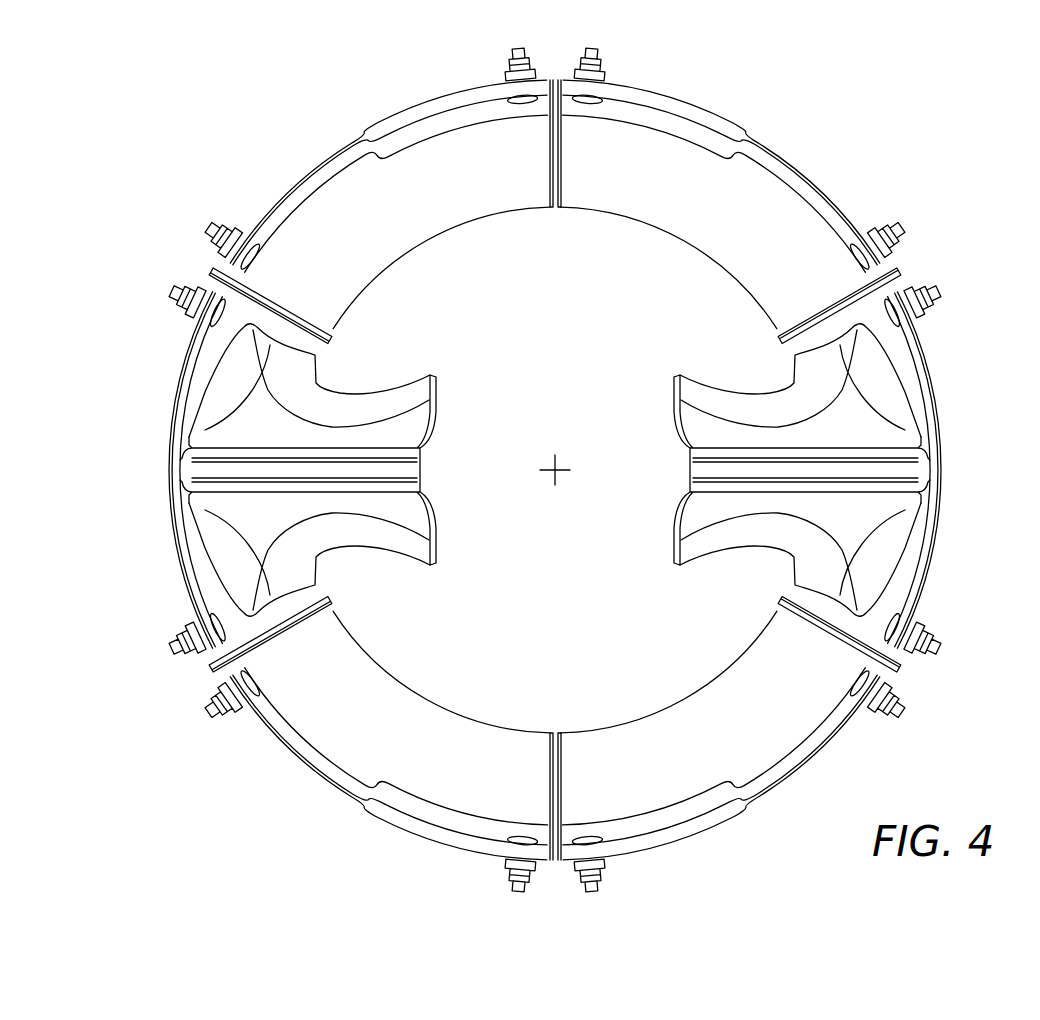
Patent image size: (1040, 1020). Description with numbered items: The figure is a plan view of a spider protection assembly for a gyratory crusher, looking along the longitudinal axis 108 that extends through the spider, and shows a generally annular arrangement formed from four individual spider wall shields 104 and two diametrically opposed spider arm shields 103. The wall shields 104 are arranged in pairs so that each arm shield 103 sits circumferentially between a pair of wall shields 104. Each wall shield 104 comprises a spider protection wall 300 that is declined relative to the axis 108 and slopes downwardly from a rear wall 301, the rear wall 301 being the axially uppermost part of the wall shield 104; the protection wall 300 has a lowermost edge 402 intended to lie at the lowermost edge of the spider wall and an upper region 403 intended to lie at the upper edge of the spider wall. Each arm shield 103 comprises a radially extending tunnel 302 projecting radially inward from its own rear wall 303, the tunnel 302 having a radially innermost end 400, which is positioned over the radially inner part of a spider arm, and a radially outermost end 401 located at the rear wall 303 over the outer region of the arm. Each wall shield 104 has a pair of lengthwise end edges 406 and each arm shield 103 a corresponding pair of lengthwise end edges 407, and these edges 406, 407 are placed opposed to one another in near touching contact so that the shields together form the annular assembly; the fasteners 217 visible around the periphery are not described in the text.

The rear wall 301 is at (689, 110).
The spider wall shield 104 is at (811, 141).
The fastener 217 is at (908, 226).
The upper region 403 is at (308, 190).
The lengthwise end edges 406 is at (558, 146).
The wall lowermost edge 402 is at (468, 223).
The spider protection wall 300 is at (663, 222).
The lengthwise end edges 407 is at (291, 310).
The radially innermost end 400 is at (672, 418).
The radially outermost end 401 is at (925, 405).
The rear wall 303 is at (940, 469).
The longitudinal axis 108 is at (565, 485).
The spider arm shield 103 is at (958, 563).
The tunnel 302 is at (717, 515).